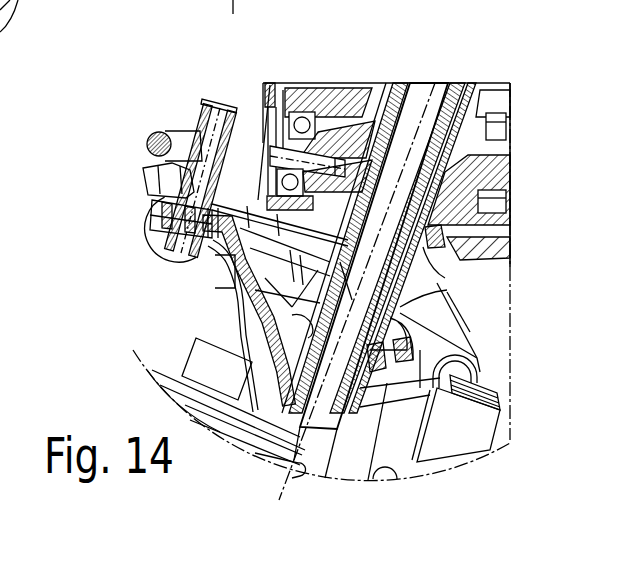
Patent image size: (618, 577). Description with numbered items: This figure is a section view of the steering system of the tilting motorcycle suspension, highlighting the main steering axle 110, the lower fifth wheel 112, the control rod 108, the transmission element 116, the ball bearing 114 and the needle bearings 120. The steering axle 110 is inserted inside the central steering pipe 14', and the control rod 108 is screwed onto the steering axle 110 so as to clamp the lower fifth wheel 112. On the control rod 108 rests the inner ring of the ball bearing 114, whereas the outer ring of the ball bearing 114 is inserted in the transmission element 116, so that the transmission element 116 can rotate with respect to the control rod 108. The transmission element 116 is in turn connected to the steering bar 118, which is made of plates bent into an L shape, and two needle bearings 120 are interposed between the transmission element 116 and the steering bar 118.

The central steering pipe 14' is at (518, 82).
The control rod 108 is at (247, 300).
The steering axle 110 is at (421, 291).
The lower fifth wheel 112 is at (440, 378).
The ball bearing 114 is at (157, 250).
The transmission element 116 is at (207, 107).
The steering bar 118 is at (150, 162).
The needle bearings 120 is at (232, 155).